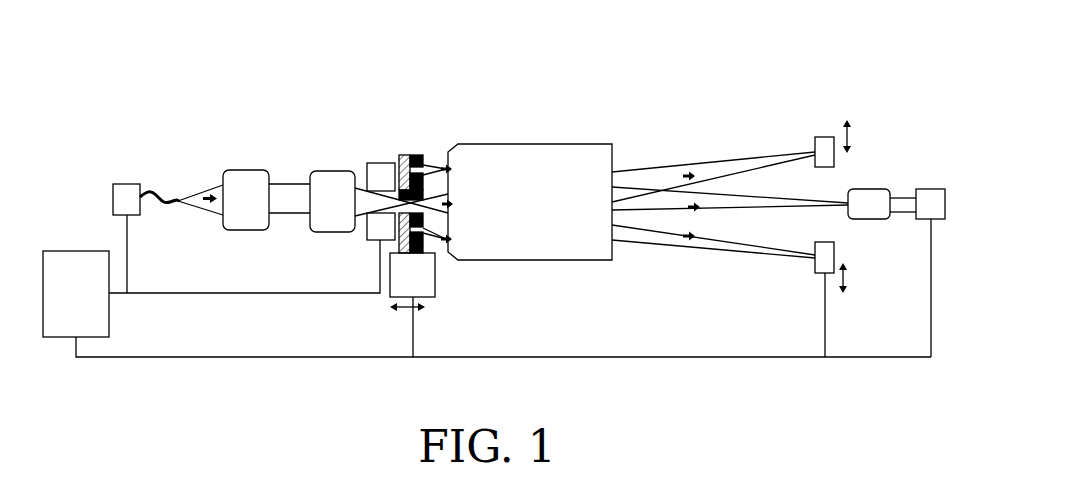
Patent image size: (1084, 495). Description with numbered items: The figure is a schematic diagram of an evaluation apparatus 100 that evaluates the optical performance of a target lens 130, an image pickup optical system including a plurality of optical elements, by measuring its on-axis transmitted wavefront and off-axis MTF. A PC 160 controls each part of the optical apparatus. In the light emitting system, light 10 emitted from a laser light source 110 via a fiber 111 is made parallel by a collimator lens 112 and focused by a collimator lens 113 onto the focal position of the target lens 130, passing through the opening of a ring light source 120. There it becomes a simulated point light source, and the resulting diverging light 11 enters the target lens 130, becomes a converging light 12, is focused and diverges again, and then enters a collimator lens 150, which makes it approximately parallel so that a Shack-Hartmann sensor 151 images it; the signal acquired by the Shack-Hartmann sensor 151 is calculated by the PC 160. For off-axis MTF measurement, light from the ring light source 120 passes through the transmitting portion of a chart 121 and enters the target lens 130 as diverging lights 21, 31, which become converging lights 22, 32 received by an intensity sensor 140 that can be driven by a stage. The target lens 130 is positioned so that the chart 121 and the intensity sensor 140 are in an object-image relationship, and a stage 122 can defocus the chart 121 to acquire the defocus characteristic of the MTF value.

The evaluation apparatus 100 is at (541, 65).
The laser light source 110 is at (104, 238).
The fiber 111 is at (157, 190).
The collimator lens 112 is at (242, 170).
The collimator lens 113 is at (318, 171).
The light 10 is at (200, 209).
The ring light source 120 is at (380, 163).
The chart 121 is at (405, 154).
The stage 122 is at (435, 275).
The target lens 130 is at (560, 144).
The diverging light 11 is at (462, 207).
The diverging light 21 is at (452, 172).
The diverging light 31 is at (452, 240).
The converging light 12 is at (730, 203).
The converging light 32 is at (713, 177).
The converging light 22 is at (713, 241).
The intensity sensor 140 is at (813, 140).
The collimator lens 150 is at (867, 189).
The Shack-Hartmann sensor 151 is at (930, 189).
The PC 160 is at (487, 298).